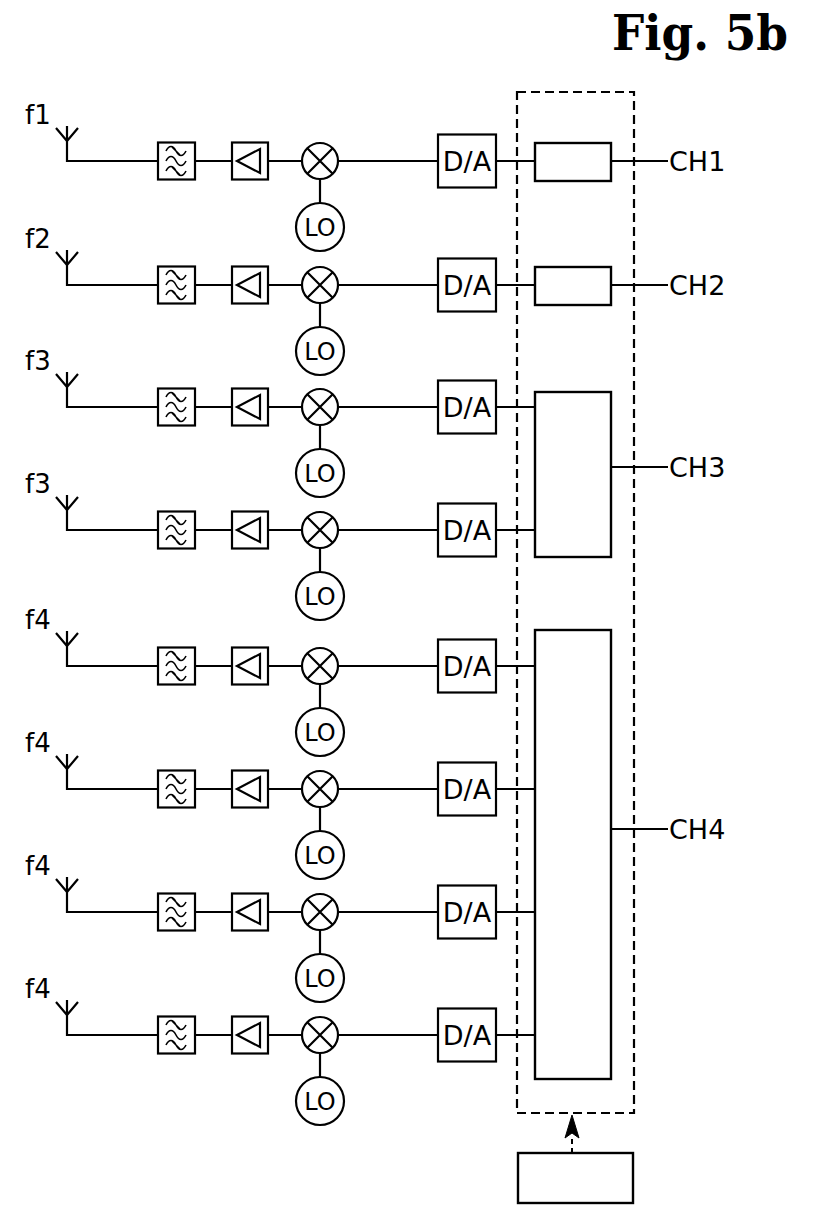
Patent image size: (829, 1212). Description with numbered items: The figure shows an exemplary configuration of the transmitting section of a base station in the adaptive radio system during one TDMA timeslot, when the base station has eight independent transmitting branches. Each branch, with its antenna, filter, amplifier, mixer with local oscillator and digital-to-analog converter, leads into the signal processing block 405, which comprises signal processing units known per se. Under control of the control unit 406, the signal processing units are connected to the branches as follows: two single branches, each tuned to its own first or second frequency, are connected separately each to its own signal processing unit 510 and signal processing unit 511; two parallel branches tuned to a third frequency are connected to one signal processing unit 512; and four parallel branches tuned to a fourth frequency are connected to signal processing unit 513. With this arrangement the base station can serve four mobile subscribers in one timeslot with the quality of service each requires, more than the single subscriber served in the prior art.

The signal processing block 405 is at (548, 92).
The control unit 406 is at (518, 1182).
The signal processing unit 510 is at (611, 155).
The signal processing unit 511 is at (611, 277).
The signal processing unit 512 is at (611, 422).
The signal processing unit 513 is at (611, 680).